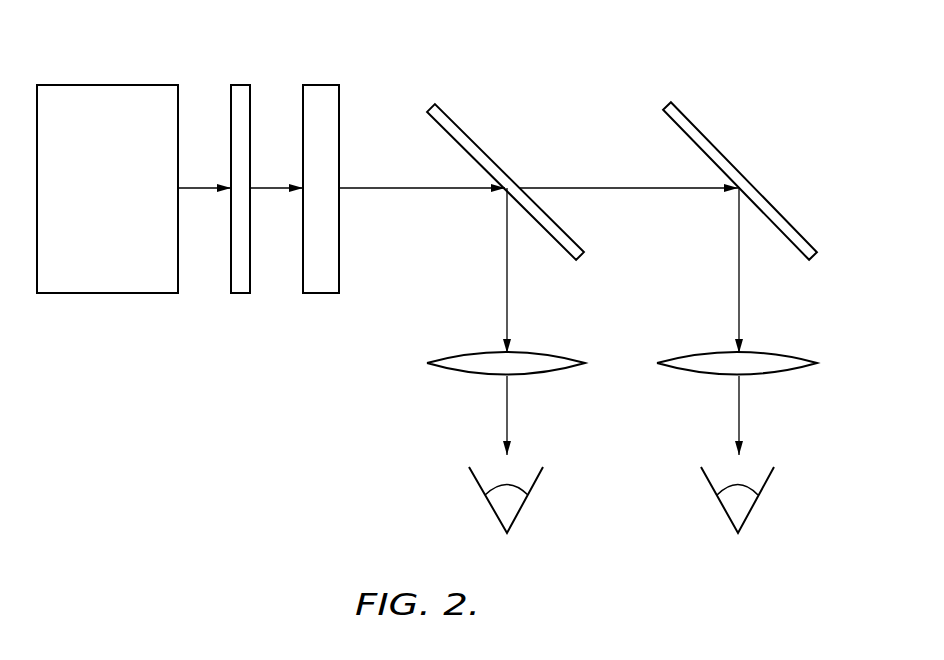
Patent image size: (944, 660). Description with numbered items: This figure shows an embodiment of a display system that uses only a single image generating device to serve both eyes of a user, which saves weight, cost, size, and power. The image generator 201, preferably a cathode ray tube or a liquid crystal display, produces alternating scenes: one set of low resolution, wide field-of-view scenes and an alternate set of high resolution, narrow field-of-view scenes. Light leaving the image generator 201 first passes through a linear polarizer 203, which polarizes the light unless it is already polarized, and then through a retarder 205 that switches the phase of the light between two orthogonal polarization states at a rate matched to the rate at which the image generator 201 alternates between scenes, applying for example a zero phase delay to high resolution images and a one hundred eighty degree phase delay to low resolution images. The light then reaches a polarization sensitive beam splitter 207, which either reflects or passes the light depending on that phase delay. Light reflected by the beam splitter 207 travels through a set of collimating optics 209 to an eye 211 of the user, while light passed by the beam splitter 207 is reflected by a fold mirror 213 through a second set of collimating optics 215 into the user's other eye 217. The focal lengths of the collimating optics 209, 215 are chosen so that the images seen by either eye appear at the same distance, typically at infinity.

The image generator 201 is at (131, 85).
The linear polarizer 203 is at (237, 85).
The retarder 205 is at (316, 85).
The polarization sensitive beam splitter 207 is at (445, 115).
The collimating optics 209 is at (558, 356).
The eye 211 is at (517, 516).
The fold mirror 213 is at (683, 113).
The second set of collimating optics 215 is at (800, 356).
The other eye 217 is at (748, 516).